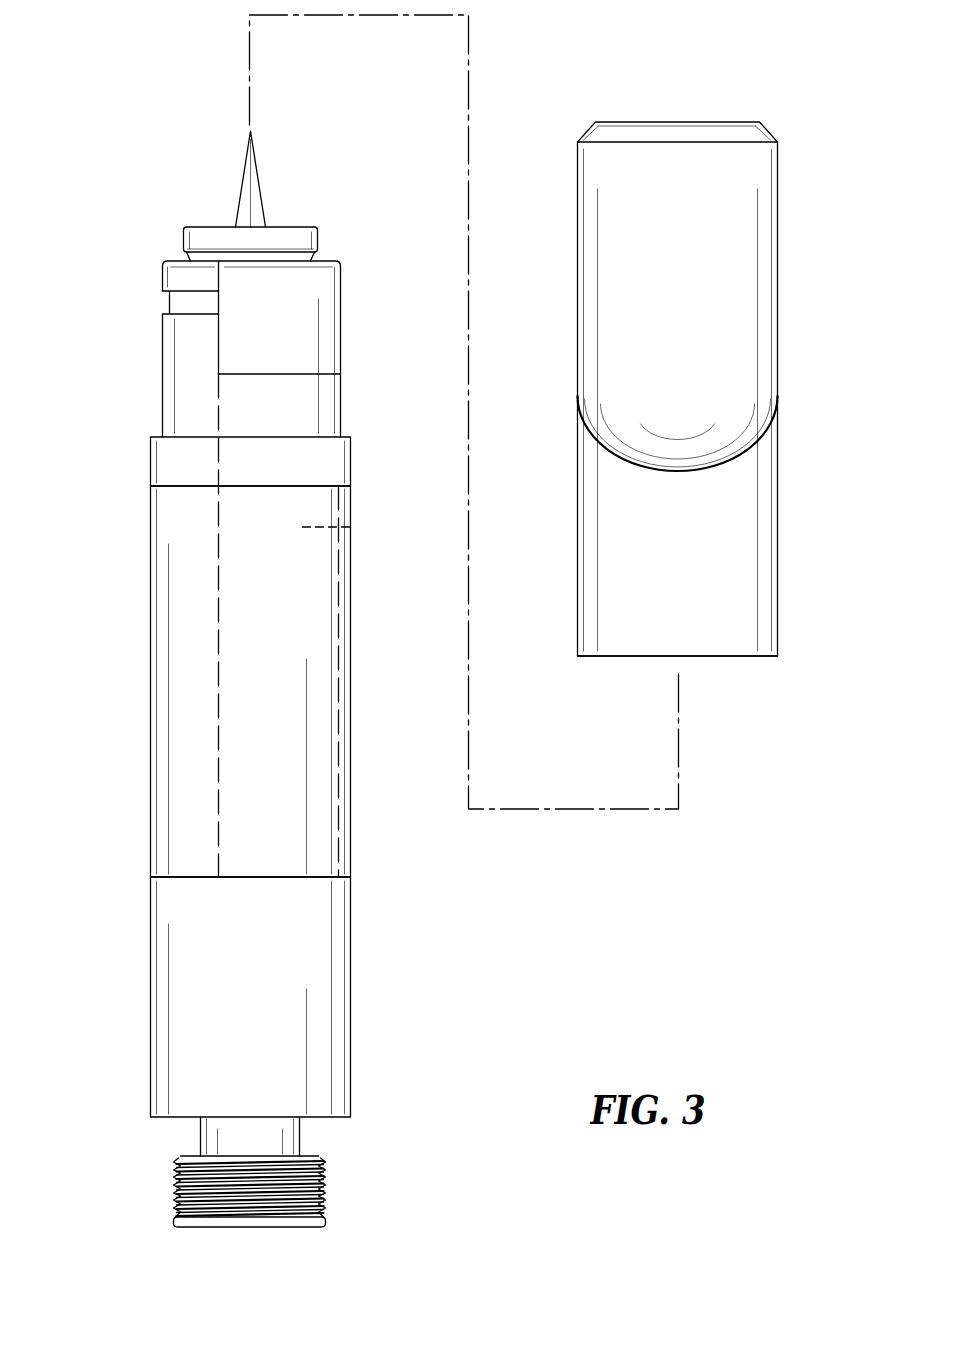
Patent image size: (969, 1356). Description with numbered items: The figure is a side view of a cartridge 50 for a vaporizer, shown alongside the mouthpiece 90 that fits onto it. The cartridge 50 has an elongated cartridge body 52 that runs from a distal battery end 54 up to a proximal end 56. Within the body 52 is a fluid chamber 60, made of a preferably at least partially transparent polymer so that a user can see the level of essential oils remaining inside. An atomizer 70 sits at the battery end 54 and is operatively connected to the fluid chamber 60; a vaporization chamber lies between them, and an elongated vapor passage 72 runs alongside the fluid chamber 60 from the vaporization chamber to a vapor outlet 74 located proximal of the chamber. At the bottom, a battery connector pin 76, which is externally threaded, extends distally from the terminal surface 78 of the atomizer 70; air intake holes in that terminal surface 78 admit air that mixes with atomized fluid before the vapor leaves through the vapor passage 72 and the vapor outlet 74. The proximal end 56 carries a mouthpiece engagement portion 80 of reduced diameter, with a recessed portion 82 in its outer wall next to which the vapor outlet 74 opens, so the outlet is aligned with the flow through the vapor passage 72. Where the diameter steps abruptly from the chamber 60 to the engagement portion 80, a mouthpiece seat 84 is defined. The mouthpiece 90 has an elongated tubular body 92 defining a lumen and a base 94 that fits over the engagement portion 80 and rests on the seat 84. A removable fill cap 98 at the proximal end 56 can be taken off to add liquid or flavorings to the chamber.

The cartridge 50 is at (124, 692).
The cartridge body 52 is at (290, 795).
The battery end 54 is at (290, 1235).
The proximal end 56 is at (190, 195).
The fluid chamber 60 is at (194, 592).
The atomizer 70 is at (215, 983).
The vapor passage 72 is at (300, 528).
The vapor outlet 74 is at (298, 372).
The battery connector pin 76 is at (208, 1222).
The terminal surface 78 is at (172, 1120).
The mouthpiece engagement portion 80 is at (160, 340).
The recessed portion 82 is at (312, 287).
The mouthpiece seat 84 is at (150, 438).
The mouthpiece 90 is at (797, 478).
The tubular body 92 is at (745, 278).
The base 94 is at (730, 660).
The removable fill cap 98 is at (278, 240).